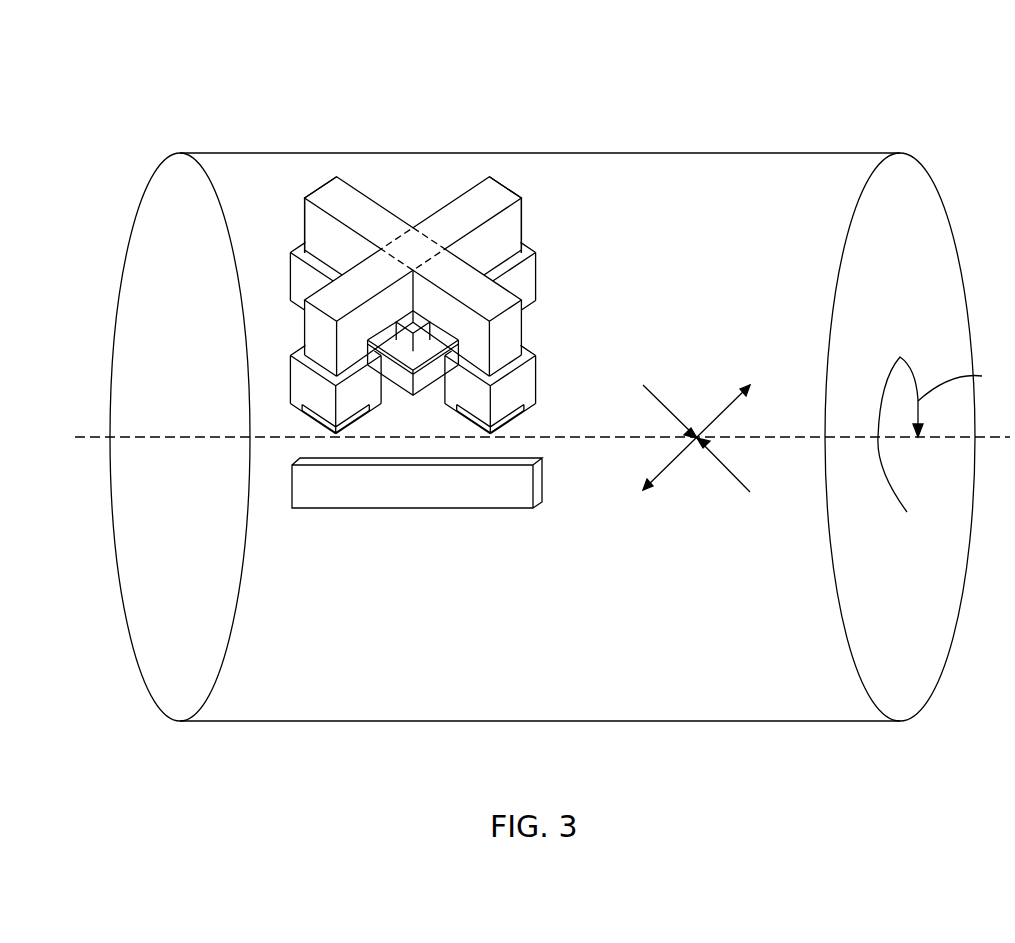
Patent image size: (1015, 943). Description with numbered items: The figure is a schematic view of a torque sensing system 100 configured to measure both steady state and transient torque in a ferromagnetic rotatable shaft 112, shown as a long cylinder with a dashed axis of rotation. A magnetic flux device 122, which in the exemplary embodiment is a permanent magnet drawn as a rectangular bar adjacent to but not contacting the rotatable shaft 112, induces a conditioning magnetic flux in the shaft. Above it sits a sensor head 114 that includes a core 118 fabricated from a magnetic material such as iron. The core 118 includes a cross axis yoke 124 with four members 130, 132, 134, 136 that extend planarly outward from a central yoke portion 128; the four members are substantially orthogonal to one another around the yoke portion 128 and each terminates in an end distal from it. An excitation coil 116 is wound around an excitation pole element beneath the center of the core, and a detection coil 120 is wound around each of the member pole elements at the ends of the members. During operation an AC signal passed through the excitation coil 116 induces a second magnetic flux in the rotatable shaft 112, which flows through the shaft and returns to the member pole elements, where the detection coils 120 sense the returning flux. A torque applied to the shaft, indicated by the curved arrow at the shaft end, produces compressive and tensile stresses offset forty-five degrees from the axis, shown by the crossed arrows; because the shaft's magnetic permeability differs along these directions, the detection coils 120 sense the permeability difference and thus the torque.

The torque sensing system 100 is at (897, 110).
The rotatable shaft 112 is at (735, 153).
The sensor head 114 is at (199, 171).
The excitation coil 116 is at (400, 355).
The core 118 is at (522, 228).
The detection coil 120 is at (527, 390).
The magnetic flux device 122 is at (365, 508).
The cross axis yoke 124 is at (371, 213).
The yoke portion 128 is at (413, 250).
The member 130 is at (331, 197).
The member 132 is at (493, 198).
The member 134 is at (505, 302).
The member 136 is at (318, 302).